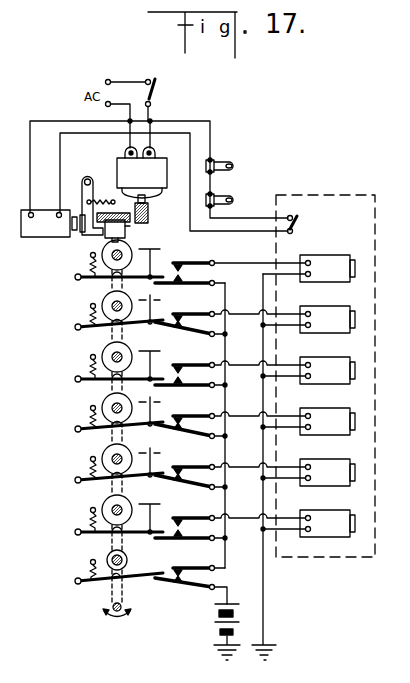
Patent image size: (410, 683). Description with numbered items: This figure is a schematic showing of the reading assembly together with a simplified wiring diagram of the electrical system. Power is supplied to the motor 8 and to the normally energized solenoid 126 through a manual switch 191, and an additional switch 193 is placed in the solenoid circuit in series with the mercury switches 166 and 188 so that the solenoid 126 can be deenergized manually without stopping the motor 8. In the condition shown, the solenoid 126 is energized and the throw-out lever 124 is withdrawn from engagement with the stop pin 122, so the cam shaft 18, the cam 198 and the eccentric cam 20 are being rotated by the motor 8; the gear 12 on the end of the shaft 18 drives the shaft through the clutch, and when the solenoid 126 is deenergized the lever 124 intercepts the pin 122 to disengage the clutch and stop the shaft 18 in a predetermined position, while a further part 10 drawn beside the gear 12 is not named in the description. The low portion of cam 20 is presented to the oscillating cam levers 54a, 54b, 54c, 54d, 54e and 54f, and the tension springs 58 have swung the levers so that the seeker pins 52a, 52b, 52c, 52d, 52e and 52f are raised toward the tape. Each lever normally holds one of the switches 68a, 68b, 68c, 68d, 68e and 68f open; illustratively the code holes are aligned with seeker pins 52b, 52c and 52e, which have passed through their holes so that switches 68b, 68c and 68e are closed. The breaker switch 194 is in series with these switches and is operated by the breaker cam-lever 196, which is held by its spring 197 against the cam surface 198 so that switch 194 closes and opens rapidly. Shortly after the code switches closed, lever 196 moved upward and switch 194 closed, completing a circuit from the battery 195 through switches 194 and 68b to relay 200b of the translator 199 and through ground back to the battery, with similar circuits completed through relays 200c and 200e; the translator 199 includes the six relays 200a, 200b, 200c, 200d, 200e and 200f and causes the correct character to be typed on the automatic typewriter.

The manual switch 191 is at (155, 93).
The motor 8 is at (157, 170).
The gear 12 is at (124, 212).
The solenoid plunger 10 is at (148, 217).
The throw-out lever 124 is at (82, 188).
The stop pin 122 is at (130, 233).
The solenoid 126 is at (47, 228).
The mercury switch 166 is at (223, 158).
The mercury switch 188 is at (223, 199).
The translator 199 is at (367, 192).
The switch 193 is at (300, 222).
The translator relay 200f is at (331, 264).
The translator relay 200e is at (331, 315).
The translator relay 200d is at (331, 366).
The translator relay 200c is at (331, 417).
The translator relay 200b is at (331, 468).
The translator relay 200a is at (331, 519).
The seeker pin 52f is at (159, 249).
The seeker pin 52e is at (157, 311).
The seeker pin 52d is at (159, 351).
The seeker pin 52c is at (157, 413).
The seeker pin 52b is at (157, 464).
The seeker pin 52a is at (159, 504).
The switch 68f is at (193, 273).
The switch 68e is at (193, 322).
The switch 68d is at (193, 375).
The switch 68c is at (193, 424).
The switch 68b is at (193, 475).
The switch 68a is at (193, 528).
The oscillating lever 54f is at (90, 278).
The oscillating lever 54e is at (90, 329).
The oscillating lever 54d is at (90, 380).
The oscillating lever 54c is at (90, 431).
The oscillating lever 54b is at (90, 482).
The oscillating lever 54a is at (90, 533).
The tension spring 58 is at (90, 256).
The eccentric cam 20 is at (136, 343).
The cam surface 198 is at (127, 559).
The spring 197 is at (90, 563).
The breaker cam-lever 196 is at (103, 583).
The breaker switch 194 is at (163, 585).
The battery 195 is at (215, 619).
The cam shaft 18 is at (105, 456).